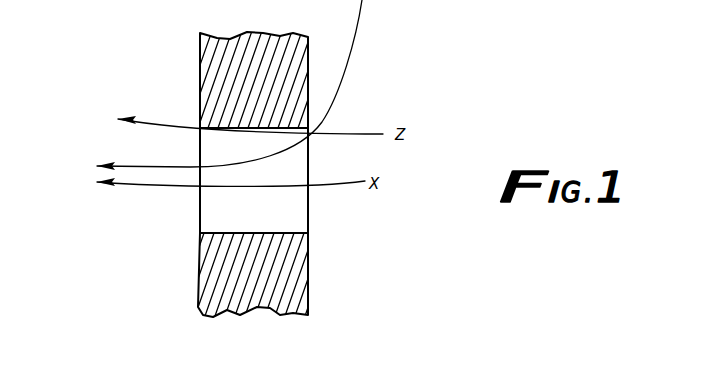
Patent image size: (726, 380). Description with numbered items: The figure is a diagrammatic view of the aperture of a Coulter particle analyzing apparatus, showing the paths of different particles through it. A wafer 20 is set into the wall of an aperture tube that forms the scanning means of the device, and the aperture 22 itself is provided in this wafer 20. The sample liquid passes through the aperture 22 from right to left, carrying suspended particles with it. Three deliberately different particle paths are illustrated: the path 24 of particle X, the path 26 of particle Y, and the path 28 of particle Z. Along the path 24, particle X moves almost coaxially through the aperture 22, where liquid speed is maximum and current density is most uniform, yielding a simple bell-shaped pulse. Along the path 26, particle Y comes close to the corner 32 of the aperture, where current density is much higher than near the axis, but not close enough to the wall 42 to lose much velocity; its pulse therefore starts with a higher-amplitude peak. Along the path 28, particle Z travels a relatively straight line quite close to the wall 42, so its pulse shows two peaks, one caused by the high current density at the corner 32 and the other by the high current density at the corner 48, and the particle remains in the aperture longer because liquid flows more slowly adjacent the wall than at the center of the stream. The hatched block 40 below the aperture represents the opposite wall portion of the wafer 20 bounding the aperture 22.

The wafer 20 is at (308, 57).
The aperture 22 is at (277, 210).
The path of particle X 24 is at (143, 183).
The path of particle Y 26 is at (142, 166).
The path of particle Z 28 is at (150, 125).
The corner of the aperture 32 is at (312, 130).
The lower block 40 is at (200, 233).
The wall of the aperture 42 is at (263, 130).
The corner of the aperture 48 is at (200, 128).